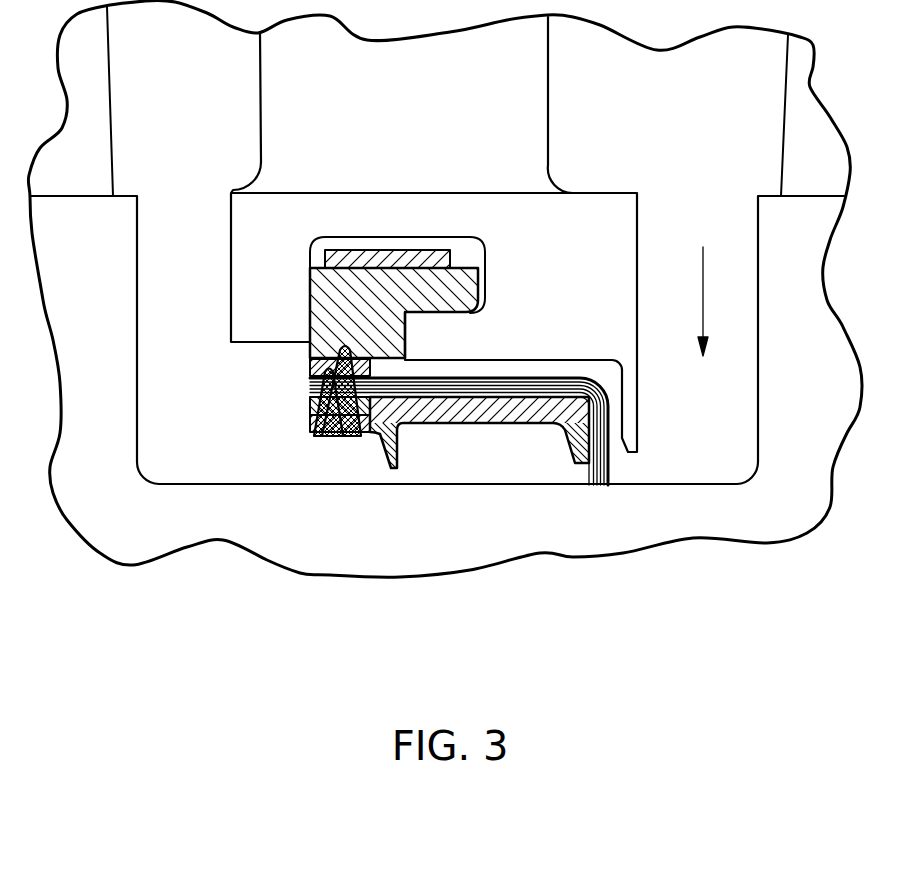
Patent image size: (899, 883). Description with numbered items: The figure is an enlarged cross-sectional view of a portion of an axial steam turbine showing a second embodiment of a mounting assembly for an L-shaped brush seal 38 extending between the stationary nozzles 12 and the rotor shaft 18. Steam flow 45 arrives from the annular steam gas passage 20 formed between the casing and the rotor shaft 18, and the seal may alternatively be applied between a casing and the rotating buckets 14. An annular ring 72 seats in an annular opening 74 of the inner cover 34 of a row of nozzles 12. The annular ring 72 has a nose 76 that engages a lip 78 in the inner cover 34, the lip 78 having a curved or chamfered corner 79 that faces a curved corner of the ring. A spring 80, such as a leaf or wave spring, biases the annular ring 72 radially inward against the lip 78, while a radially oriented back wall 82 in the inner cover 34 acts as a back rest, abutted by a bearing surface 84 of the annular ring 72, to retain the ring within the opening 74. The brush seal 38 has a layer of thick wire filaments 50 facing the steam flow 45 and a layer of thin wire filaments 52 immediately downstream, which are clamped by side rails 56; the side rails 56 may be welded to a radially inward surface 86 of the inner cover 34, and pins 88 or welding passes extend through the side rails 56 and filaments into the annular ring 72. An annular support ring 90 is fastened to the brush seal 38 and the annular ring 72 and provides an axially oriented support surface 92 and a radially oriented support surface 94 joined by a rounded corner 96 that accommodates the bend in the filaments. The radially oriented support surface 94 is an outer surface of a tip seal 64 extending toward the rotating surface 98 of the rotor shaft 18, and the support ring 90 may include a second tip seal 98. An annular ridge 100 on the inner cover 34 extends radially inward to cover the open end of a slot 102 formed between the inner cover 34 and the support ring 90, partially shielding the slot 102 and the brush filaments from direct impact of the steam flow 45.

The stationary nozzles 12 is at (383, 123).
The rotating buckets 14 is at (71, 168).
The rotor shaft 18 is at (118, 543).
The annular steam gas passage 20 is at (170, 85).
The inner cover 34 is at (584, 268).
The L-shaped brush seal 38 is at (497, 388).
The steam flow 45 is at (703, 286).
The thick wire filaments 50 is at (611, 473).
The thin wire filaments 52 is at (597, 486).
The side rails 56 is at (310, 412).
The tip seal 64 is at (578, 466).
The annular ring 72 is at (355, 312).
The annular opening 74 is at (471, 250).
The nose 76 is at (482, 304).
The lip 78 is at (418, 350).
The chamfered corner 79 is at (366, 262).
The spring 80 is at (417, 256).
The back wall 82 is at (318, 296).
The bearing surface 84 is at (309, 285).
The radially inward surface 86 is at (334, 262).
The pins 88 is at (347, 434).
The annular support ring 90 is at (430, 405).
The axially oriented support surface 92 is at (496, 424).
The radially oriented support surface 94 is at (569, 440).
The rounded corner 96 is at (607, 382).
The rotating surface 98 is at (397, 450).
The annular ridge 100 is at (632, 417).
The slot 102 is at (577, 369).